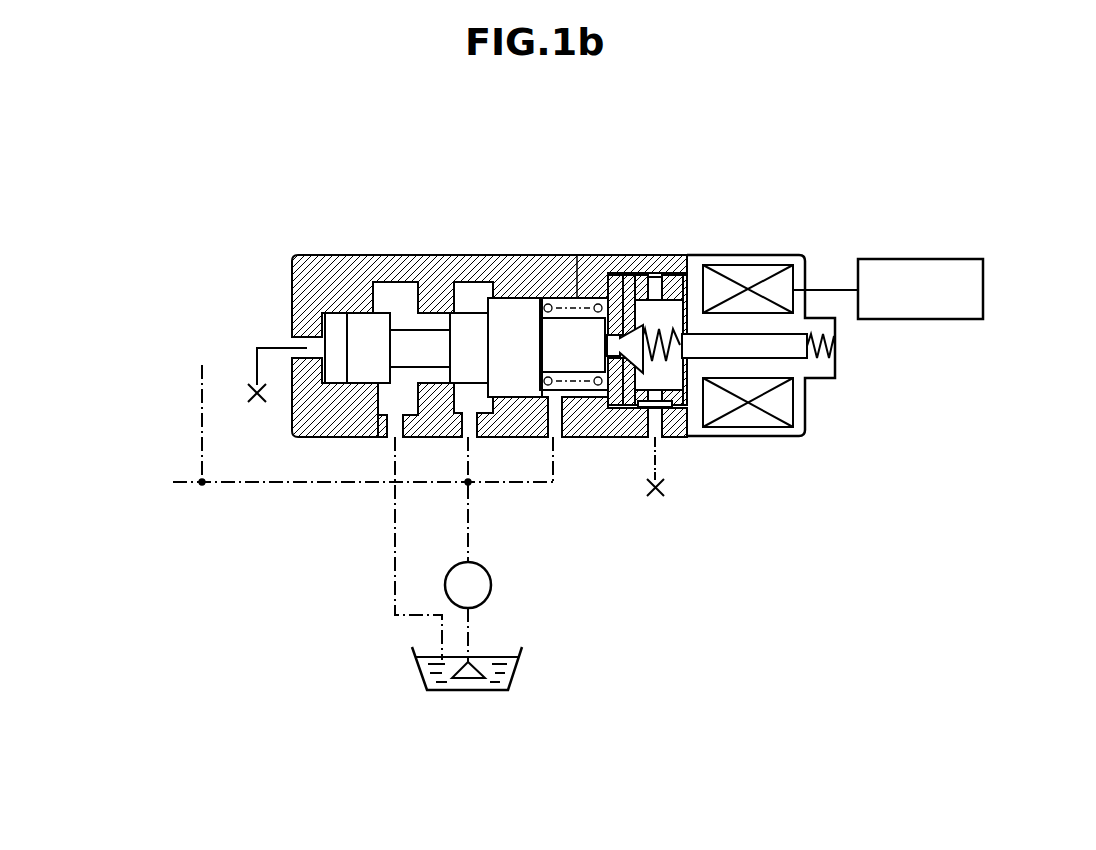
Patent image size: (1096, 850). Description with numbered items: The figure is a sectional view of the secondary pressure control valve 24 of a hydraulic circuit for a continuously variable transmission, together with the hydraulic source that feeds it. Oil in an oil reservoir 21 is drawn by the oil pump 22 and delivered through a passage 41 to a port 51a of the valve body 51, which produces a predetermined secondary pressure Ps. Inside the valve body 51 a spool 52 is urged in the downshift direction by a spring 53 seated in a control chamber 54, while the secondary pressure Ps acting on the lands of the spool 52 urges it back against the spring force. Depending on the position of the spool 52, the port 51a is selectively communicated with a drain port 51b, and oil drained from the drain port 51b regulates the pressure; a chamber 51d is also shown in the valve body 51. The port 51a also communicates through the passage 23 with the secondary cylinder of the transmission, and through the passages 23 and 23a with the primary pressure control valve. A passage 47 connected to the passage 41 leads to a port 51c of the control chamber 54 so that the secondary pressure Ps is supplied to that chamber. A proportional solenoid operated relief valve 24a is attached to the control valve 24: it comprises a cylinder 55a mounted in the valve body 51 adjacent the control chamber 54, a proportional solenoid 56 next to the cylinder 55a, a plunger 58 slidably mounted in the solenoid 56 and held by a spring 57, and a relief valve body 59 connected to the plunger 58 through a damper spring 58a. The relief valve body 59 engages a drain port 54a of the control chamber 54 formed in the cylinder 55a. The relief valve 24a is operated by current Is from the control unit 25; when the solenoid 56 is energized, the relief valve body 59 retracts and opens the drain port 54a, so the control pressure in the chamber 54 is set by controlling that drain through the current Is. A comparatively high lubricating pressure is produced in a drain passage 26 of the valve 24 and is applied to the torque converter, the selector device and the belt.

The oil reservoir 21 is at (515, 670).
The oil pump 22 is at (491, 587).
The passage 23 is at (300, 486).
The passage 23a is at (166, 423).
The secondary pressure control valve 24 is at (272, 303).
The proportional solenoid operated relief valve 24a is at (731, 247).
The control unit 25 is at (913, 258).
The drain passage 26 is at (660, 472).
The passage 41 is at (470, 527).
The passage 47 is at (503, 478).
The valve body 51 is at (323, 255).
The port 51a is at (466, 438).
The drain port 51b is at (393, 437).
The port 51c is at (558, 438).
The chamber 51d is at (453, 290).
The spool 52 is at (368, 300).
The spring 53 is at (597, 395).
The control chamber 54 is at (577, 298).
The drain port 54a is at (629, 290).
The cylinder 55a is at (630, 437).
The proportional solenoid 56 is at (770, 268).
The spring 57 is at (822, 364).
The plunger 58 is at (793, 324).
The damper spring 58a is at (679, 437).
The relief valve body 59 is at (643, 338).